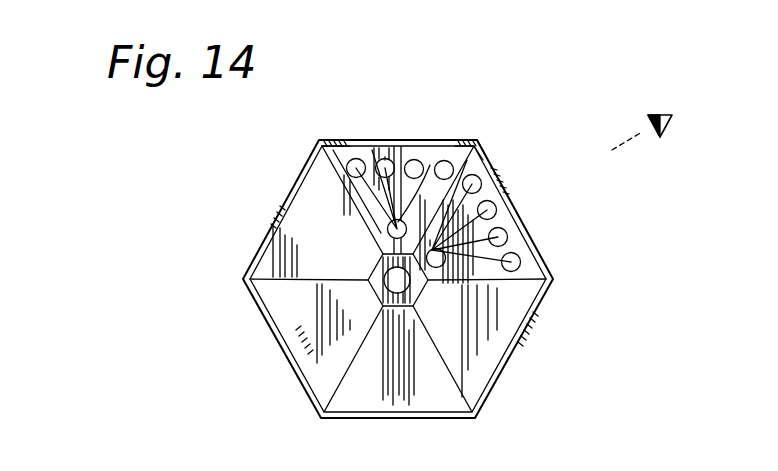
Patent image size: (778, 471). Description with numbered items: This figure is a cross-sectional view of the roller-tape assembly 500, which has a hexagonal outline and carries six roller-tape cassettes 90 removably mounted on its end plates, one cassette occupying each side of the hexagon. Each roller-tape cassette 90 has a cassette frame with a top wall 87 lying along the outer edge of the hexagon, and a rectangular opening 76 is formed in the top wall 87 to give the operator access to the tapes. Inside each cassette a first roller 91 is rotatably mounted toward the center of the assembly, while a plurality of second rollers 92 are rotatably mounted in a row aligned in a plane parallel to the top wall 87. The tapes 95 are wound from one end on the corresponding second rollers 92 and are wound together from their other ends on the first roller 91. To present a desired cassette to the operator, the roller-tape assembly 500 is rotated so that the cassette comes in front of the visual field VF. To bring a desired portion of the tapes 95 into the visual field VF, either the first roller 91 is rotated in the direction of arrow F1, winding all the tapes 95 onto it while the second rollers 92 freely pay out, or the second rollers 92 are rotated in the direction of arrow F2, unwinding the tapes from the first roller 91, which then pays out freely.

The roller-tape assembly 500 is at (384, 255).
The roller-tape cassette 90 is at (282, 201).
The rectangular opening 76 is at (346, 140).
The top wall 87 is at (472, 142).
The first roller 91 is at (440, 270).
The second rollers 92 is at (356, 168).
The tapes 95 is at (372, 204).
The arrow F1 is at (440, 169).
The arrow F2 is at (518, 163).
The visual field VF is at (658, 135).